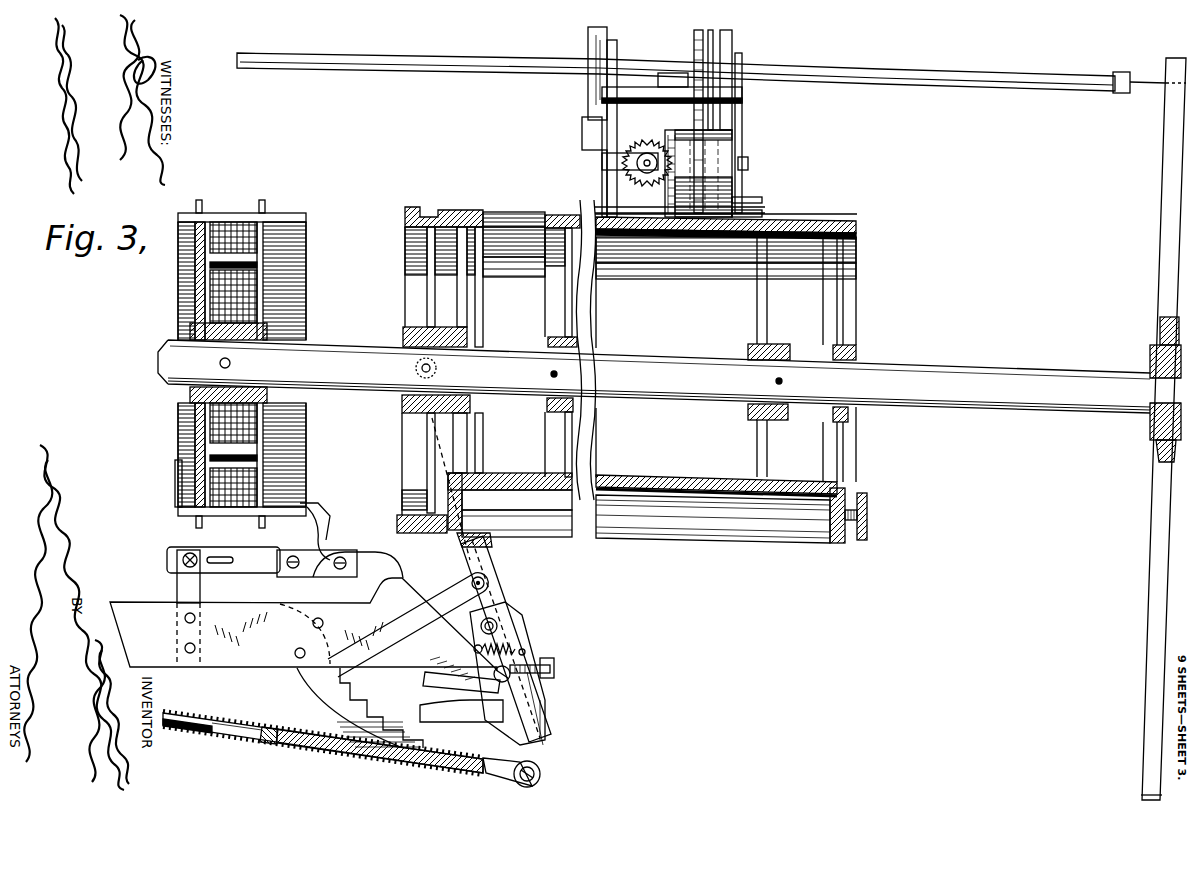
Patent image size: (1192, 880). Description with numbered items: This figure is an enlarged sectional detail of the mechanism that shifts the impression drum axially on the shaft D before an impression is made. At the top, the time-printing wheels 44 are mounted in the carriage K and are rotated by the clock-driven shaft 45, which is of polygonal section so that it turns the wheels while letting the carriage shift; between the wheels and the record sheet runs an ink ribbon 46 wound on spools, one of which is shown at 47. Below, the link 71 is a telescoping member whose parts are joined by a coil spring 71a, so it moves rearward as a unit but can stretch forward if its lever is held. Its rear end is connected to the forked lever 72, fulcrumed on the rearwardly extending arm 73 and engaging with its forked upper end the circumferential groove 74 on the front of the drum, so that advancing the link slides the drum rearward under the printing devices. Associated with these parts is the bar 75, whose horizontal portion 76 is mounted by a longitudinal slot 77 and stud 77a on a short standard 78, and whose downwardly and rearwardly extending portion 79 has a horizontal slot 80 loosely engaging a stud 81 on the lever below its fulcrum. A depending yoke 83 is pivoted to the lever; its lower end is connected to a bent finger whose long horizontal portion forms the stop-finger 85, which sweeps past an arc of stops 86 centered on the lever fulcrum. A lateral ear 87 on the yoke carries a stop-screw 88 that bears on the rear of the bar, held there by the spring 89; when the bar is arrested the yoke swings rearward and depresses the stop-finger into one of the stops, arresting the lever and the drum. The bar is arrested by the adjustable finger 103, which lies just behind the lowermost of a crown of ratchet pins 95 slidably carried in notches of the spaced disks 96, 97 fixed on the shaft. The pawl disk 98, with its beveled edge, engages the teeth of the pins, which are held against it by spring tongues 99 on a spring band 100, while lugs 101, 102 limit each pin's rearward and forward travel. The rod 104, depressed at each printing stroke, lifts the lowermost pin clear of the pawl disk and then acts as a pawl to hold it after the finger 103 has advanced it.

The shaft D is at (350, 365).
The motor frame post M is at (588, 40).
The carriage K is at (642, 143).
The time-printing wheels 44 is at (700, 30).
The clock-driven shaft 45 is at (917, 70).
The ink ribbon 46 is at (762, 205).
The spool 47 is at (735, 143).
The link 71 is at (250, 716).
The coil spring 71a is at (288, 726).
The forked lever 72 is at (535, 760).
The arm 73 is at (408, 625).
The circumferential groove 74 is at (446, 212).
The bar 75 is at (378, 560).
The horizontal portion 76 is at (278, 565).
The longitudinal slot 77 is at (222, 568).
The stud 77a is at (190, 553).
The short standard 78 is at (180, 580).
The downwardly and rearwardly extending portion 79 is at (440, 590).
The horizontal slot 80 is at (478, 686).
The stud 81 is at (512, 678).
The depending yoke 83 is at (517, 617).
The stop-finger 85 is at (445, 716).
The stops 86 is at (383, 698).
The lateral ear 87 is at (550, 654).
The stop-screw 88 is at (555, 666).
The spring 89 is at (520, 652).
The ratchet pins 95 is at (300, 222).
The disk 96 is at (192, 415).
The disk 97 is at (258, 428).
The pawl disk 98 is at (195, 440).
The spring tongues 99 is at (205, 518).
The spring band 100 is at (262, 518).
The lug 101 is at (255, 492).
The lug 102 is at (300, 503).
The finger 103 is at (322, 505).
The rod 104 is at (175, 472).